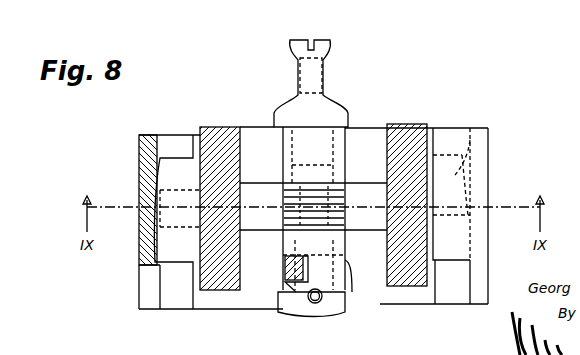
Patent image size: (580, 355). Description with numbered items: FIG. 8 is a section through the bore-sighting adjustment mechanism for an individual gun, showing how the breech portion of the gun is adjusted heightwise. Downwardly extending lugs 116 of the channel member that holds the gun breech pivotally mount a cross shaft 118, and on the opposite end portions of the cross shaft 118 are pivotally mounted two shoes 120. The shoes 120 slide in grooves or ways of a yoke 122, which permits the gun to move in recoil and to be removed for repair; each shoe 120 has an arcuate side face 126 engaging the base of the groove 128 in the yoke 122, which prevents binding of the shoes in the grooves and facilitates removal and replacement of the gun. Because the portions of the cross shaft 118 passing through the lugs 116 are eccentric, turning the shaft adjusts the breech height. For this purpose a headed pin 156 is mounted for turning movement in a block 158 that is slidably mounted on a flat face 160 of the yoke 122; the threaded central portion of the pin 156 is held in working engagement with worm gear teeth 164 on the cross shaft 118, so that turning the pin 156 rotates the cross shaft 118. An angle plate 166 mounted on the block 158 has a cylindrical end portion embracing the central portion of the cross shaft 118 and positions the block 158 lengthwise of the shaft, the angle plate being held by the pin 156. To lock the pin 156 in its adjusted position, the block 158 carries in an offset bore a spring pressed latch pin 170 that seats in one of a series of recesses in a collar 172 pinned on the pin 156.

The downwardly extending lugs 116 is at (223, 126).
The cross shaft 118 is at (362, 186).
The shoes 120 is at (176, 160).
The yoke 122 is at (488, 174).
The arcuate side face 126 is at (158, 165).
The groove 128 is at (158, 268).
The headed pin 156 is at (300, 48).
The block 158 is at (348, 262).
The flat face 160 is at (283, 258).
The worm gear teeth 164 is at (284, 192).
The angle plate 166 is at (279, 148).
The spring pressed latch pin 170 is at (286, 280).
The collar 172 is at (347, 300).